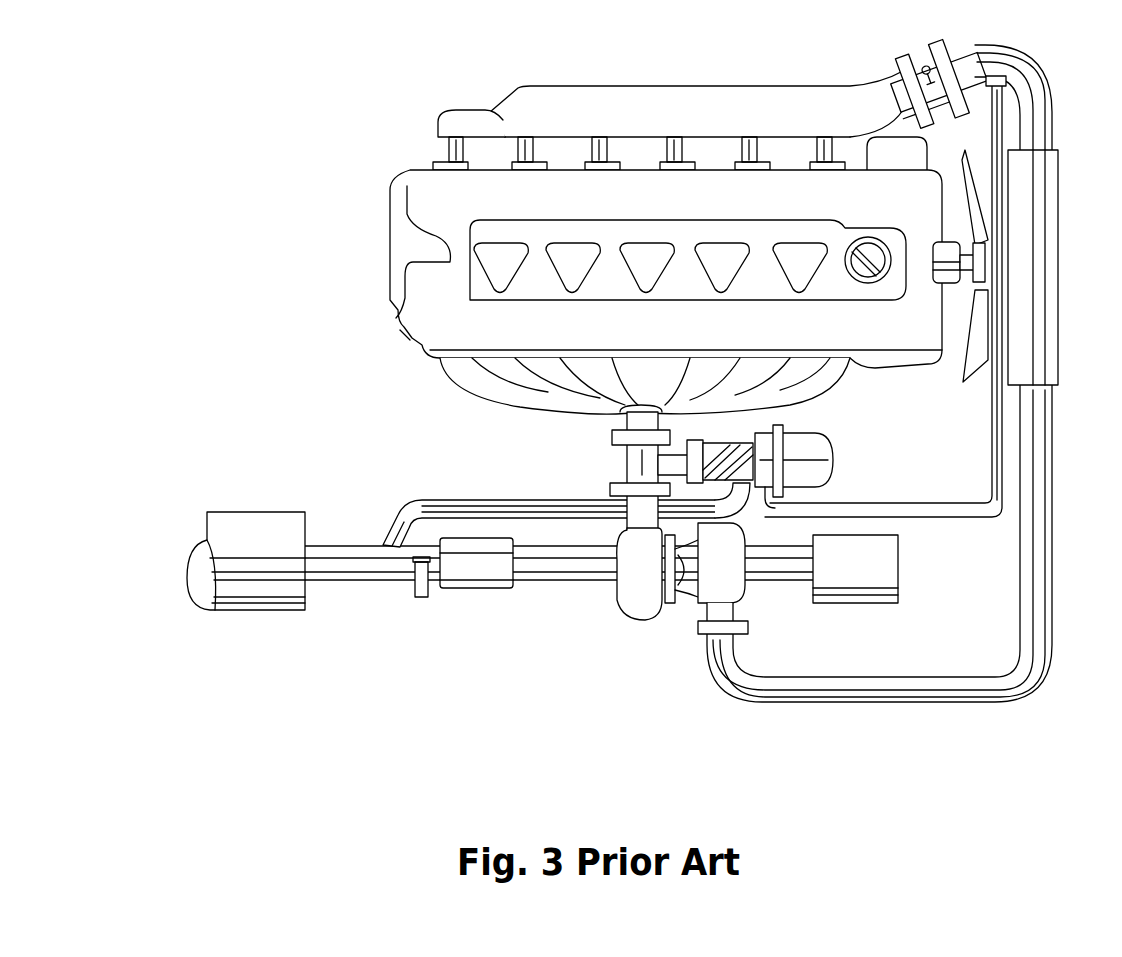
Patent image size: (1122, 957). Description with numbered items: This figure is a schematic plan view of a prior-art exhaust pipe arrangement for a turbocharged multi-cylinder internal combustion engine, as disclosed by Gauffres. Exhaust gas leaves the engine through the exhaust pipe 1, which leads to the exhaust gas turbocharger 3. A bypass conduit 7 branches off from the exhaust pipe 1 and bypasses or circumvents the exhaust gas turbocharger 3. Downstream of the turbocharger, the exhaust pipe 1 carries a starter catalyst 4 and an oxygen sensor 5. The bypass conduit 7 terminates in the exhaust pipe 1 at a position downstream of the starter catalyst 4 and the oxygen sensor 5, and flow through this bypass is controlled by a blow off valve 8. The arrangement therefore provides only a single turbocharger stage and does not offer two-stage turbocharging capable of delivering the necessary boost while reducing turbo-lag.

The exhaust pipe 1 is at (590, 470).
The exhaust gas turbocharger 3 is at (620, 623).
The starter catalyst 4 is at (482, 589).
The oxygen sensor 5 is at (418, 598).
The bypass conduit 7 is at (452, 500).
The blow off valve 8 is at (728, 454).